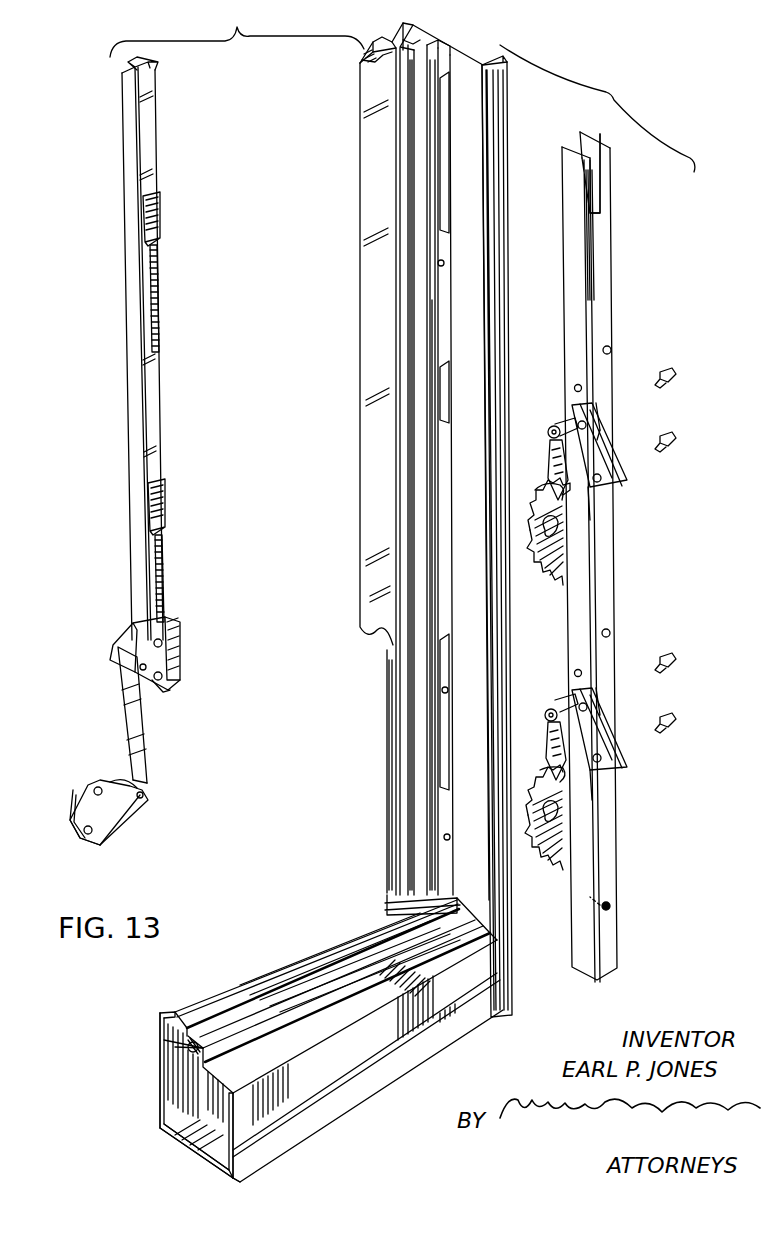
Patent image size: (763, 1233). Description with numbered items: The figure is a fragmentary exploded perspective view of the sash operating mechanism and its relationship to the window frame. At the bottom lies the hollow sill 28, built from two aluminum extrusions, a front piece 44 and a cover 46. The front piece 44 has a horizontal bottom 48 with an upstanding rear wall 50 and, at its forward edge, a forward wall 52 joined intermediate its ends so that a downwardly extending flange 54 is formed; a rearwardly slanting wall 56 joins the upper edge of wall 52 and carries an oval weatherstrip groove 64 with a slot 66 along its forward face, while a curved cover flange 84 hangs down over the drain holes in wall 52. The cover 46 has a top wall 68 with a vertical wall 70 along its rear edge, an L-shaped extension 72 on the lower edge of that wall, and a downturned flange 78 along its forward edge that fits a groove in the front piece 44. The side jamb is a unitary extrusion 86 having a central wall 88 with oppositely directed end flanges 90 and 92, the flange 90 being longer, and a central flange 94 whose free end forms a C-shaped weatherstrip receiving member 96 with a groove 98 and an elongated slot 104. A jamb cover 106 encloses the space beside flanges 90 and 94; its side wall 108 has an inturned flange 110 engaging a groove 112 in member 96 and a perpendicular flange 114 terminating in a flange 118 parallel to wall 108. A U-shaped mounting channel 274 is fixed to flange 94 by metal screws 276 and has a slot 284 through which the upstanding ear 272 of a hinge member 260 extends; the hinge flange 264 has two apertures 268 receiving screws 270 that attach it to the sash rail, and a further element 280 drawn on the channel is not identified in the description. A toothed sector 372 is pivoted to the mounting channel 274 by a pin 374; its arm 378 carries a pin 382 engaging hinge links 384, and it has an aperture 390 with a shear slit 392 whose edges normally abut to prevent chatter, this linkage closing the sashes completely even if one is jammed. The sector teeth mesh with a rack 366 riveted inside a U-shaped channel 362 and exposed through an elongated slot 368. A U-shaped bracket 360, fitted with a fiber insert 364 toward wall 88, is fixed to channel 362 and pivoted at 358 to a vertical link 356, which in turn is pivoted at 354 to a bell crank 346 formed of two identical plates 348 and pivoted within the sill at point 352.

The flange 118 is at (356, 27).
The jamb extrusion 86 is at (508, 38).
The channel 362 is at (162, 428).
The elongated slot 368 is at (162, 222).
The rack 366 is at (159, 326).
The bracket 360 is at (175, 660).
The fiber insert 364 is at (182, 645).
The pivot 358 is at (164, 690).
The link 356 is at (126, 708).
The pivot point 352 is at (107, 783).
The pivot 354 is at (148, 782).
The plates 348 is at (78, 801).
The bell crank 346 is at (125, 810).
The jamb cover 106 is at (347, 210).
The side wall 108 is at (372, 143).
The elongated slot 104 is at (392, 106).
The inturned flange 110 is at (404, 72).
The flange 90 is at (410, 27).
The groove 98 is at (419, 50).
The weatherstrip receiving member 96 is at (368, 66).
The flange 114 is at (356, 52).
The central wall 88 is at (477, 51).
The flange 92 is at (495, 80).
The central flange 94 is at (452, 84).
The aperture 390 is at (442, 169).
The mounting channel 274 is at (612, 560).
The slot 284 is at (603, 198).
The metal screws 276 is at (611, 906).
The hole 280 is at (574, 386).
The upstanding ear 272 is at (598, 385).
The hinge member 260 is at (620, 425).
The hinge flange 264 is at (590, 460).
The apertures 268 is at (602, 478).
The screws 270 is at (672, 366).
The pin 374 is at (578, 503).
The hinge links 384 is at (560, 424).
The pin 382 is at (548, 436).
The arm 378 is at (550, 458).
The shear slit 392 is at (546, 486).
The toothed sector 372 is at (550, 545).
The sill 28 is at (406, 1079).
The upstanding wall 50 is at (158, 1104).
The vertical wall 70 is at (157, 1042).
The L-shaped extension 72 is at (222, 1125).
The bottom 48 is at (200, 1150).
The flange 54 is at (228, 1178).
The oval groove 64 is at (190, 1052).
The groove 112 is at (160, 1014).
The top wall 68 is at (185, 1020).
The downturned flange 78 is at (195, 1040).
The cover 46 is at (252, 990).
The slot 66 is at (328, 960).
The rearwardly slanting wall 56 is at (362, 975).
The front piece 44 is at (365, 1060).
The cover flange 84 is at (462, 1030).
The forward wall 52 is at (255, 1133).